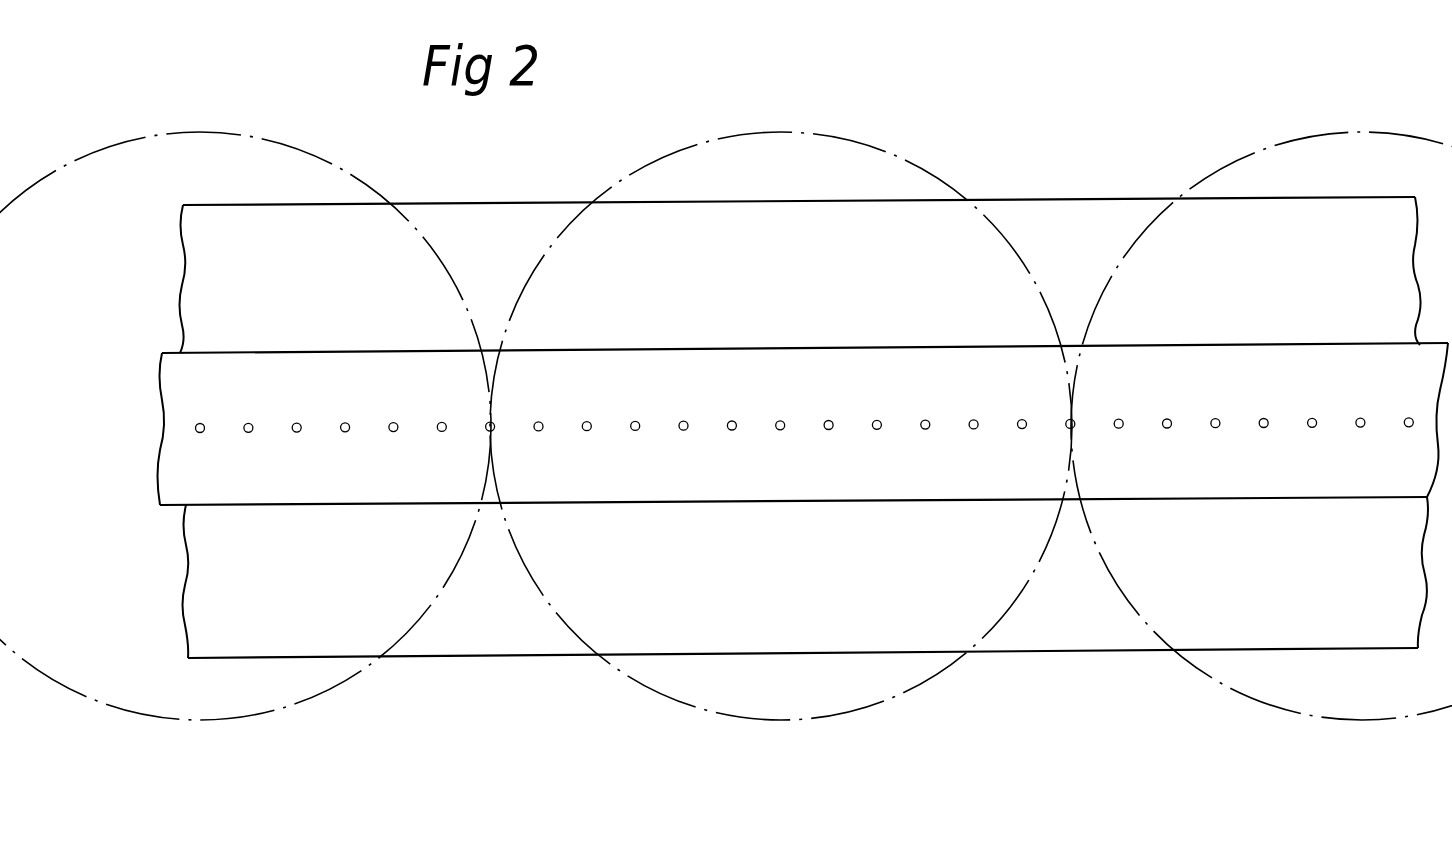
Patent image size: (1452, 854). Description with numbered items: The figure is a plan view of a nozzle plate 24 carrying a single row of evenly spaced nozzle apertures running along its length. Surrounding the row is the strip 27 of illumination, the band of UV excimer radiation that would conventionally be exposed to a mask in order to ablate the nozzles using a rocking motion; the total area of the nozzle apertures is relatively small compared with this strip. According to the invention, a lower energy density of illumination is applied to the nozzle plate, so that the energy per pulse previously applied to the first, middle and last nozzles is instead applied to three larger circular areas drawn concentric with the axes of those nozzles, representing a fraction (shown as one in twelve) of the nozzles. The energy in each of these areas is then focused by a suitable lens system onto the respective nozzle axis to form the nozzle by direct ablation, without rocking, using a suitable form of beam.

The nozzle plate 24 is at (1090, 652).
The strip of illumination 27 is at (737, 500).